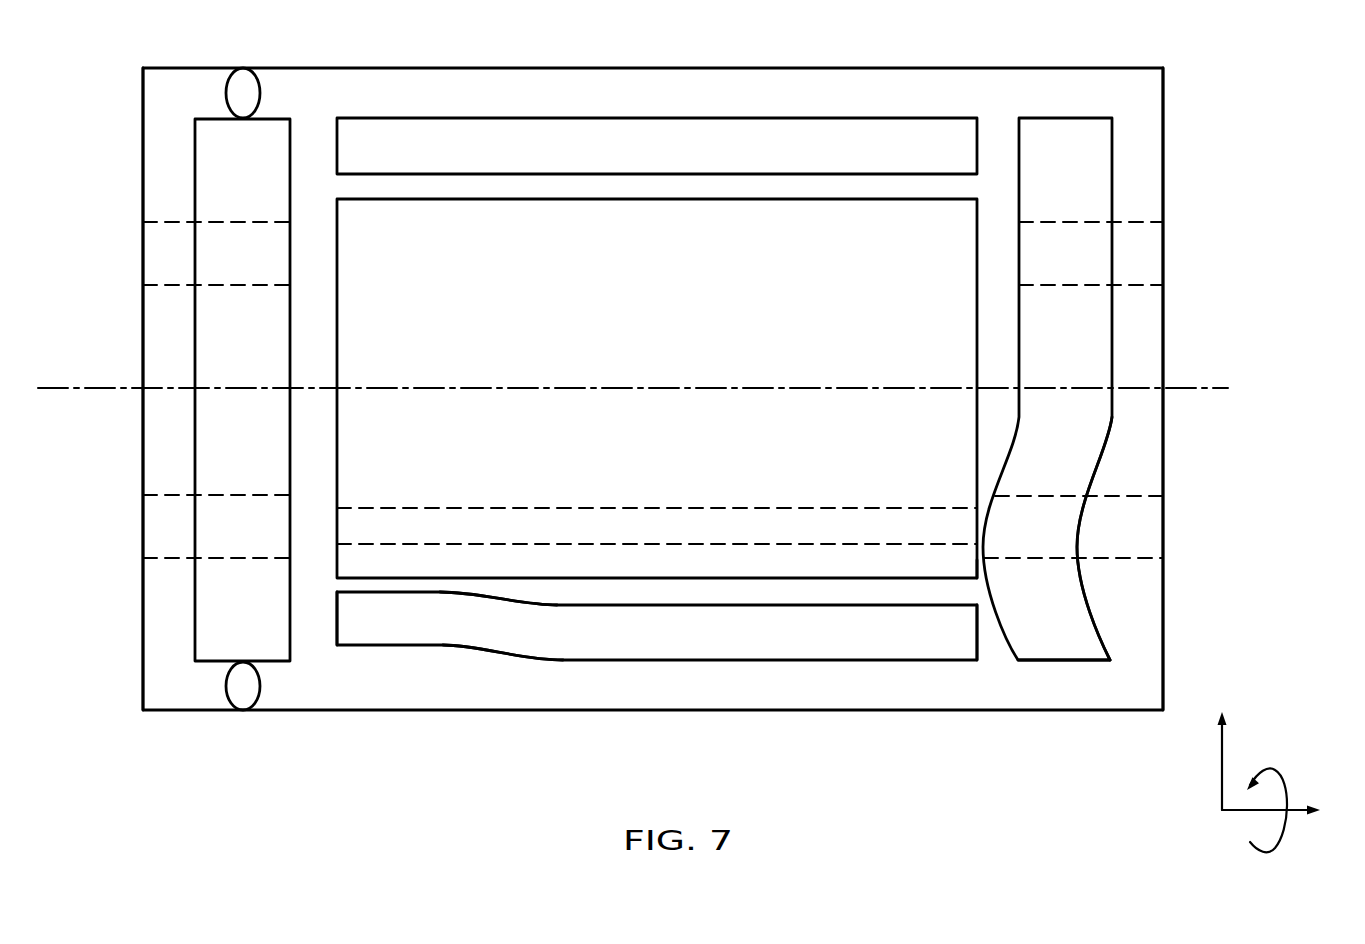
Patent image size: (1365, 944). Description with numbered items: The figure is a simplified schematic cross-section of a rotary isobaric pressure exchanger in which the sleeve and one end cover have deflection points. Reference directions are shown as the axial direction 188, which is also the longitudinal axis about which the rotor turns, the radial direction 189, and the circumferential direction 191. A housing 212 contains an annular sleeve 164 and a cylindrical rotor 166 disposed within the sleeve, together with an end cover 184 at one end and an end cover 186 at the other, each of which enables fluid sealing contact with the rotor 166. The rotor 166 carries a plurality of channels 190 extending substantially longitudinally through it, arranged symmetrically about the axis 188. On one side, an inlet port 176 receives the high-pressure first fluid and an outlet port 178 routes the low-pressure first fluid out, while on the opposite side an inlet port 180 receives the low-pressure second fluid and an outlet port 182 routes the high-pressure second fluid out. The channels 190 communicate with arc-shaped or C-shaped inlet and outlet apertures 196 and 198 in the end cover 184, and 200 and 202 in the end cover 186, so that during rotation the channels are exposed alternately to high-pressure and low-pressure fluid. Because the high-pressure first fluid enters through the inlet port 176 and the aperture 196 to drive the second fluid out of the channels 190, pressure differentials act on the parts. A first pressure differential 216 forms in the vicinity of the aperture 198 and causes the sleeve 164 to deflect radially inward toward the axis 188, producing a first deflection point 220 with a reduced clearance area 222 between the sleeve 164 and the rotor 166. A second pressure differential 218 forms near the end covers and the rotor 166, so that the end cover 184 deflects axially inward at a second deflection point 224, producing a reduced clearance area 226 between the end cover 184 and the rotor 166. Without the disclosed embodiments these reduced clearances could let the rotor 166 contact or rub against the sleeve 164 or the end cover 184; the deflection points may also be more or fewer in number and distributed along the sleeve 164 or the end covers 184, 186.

The housing 212 is at (848, 67).
The outlet port 182 is at (143, 252).
The inlet port 180 is at (143, 523).
The inlet port 176 is at (1163, 248).
The outlet port 178 is at (1163, 522).
The sleeve 164 is at (725, 158).
The rotor 166 is at (685, 293).
The channels 190 is at (727, 507).
The axial direction 188 is at (653, 388).
The radial direction 189 is at (1222, 768).
The circumferential direction 191 is at (1280, 840).
The second pressure differential 218 is at (180, 646).
The inlet aperture 200 is at (240, 222).
The outlet aperture 202 is at (217, 558).
The inlet aperture 196 is at (1092, 222).
The outlet aperture 198 is at (1058, 496).
The end cover 186 is at (276, 663).
The end cover 184 is at (1038, 660).
The second deflection point 224 is at (1105, 598).
The reduced clearance area 226 is at (975, 592).
The first pressure differential 216 is at (350, 676).
The first deflection point 220 is at (491, 676).
The reduced clearance area 222 is at (520, 588).